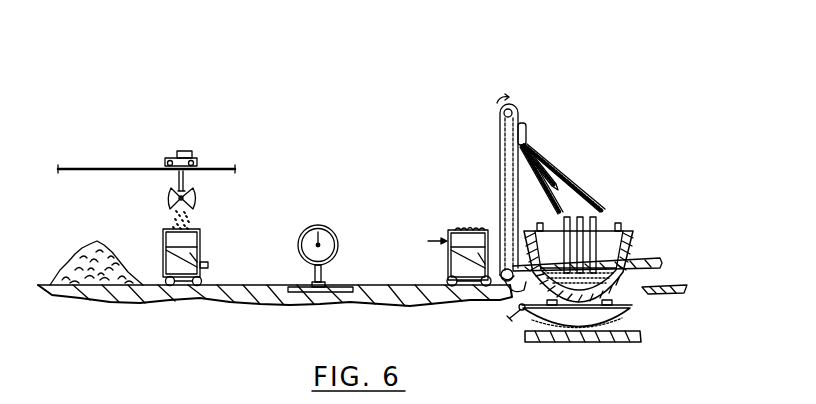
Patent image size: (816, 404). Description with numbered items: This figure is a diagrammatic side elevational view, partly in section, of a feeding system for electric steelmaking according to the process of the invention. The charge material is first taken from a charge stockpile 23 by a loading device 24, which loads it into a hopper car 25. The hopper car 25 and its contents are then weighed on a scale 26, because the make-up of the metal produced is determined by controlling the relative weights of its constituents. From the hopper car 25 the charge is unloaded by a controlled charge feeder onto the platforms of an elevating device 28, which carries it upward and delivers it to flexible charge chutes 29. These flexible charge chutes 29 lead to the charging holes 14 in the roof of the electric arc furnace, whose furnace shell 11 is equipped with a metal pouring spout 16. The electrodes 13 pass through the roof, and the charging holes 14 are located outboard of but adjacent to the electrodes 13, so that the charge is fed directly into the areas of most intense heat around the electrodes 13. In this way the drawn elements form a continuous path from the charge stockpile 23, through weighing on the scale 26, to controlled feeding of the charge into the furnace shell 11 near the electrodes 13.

The furnace shell 11 is at (634, 240).
The electrodes 13 is at (584, 258).
The charging holes 14 is at (603, 222).
The metal pouring spout 16 is at (661, 262).
The charge stockpile 23 is at (84, 246).
The loading device 24 is at (199, 197).
The hopper car 25 is at (201, 240).
The scale 26 is at (320, 226).
The elevating device 28 is at (499, 139).
The flexible charge chutes 29 is at (573, 185).